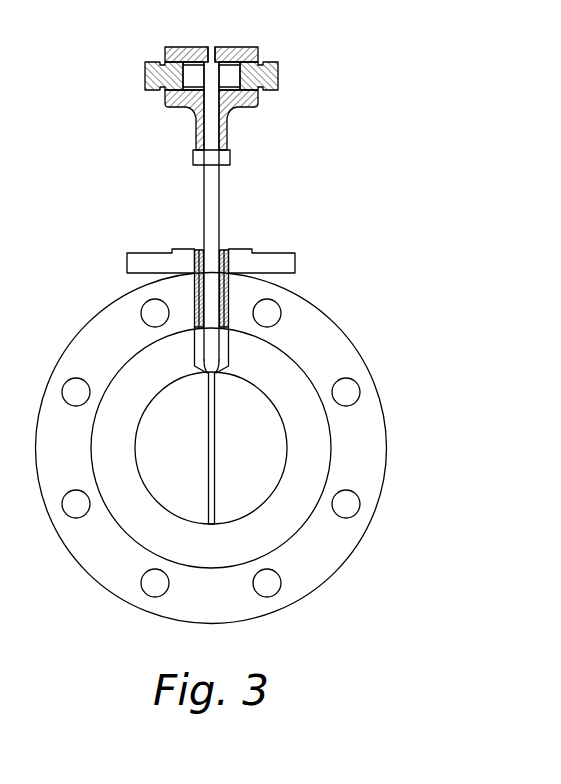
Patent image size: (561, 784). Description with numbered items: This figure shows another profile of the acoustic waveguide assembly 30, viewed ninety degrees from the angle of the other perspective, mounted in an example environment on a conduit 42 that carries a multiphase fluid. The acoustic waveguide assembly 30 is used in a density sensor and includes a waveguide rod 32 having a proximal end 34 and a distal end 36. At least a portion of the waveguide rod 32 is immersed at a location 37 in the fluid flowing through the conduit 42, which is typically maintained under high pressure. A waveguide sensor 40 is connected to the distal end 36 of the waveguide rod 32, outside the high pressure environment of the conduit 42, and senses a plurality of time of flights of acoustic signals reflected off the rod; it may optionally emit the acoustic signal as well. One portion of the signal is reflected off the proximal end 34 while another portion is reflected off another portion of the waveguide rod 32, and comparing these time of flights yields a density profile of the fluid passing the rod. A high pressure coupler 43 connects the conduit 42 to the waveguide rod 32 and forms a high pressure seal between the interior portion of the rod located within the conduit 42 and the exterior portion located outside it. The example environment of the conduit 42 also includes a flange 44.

The acoustic waveguide assembly 30 is at (263, 146).
The waveguide rod 32 is at (218, 208).
The proximal end 34 is at (207, 495).
The distal end 36 is at (208, 122).
The location 37 is at (215, 429).
The waveguide sensor 40 is at (198, 44).
The conduit 42 is at (277, 490).
The high pressure coupler 43 is at (224, 250).
The flange 44 is at (394, 448).